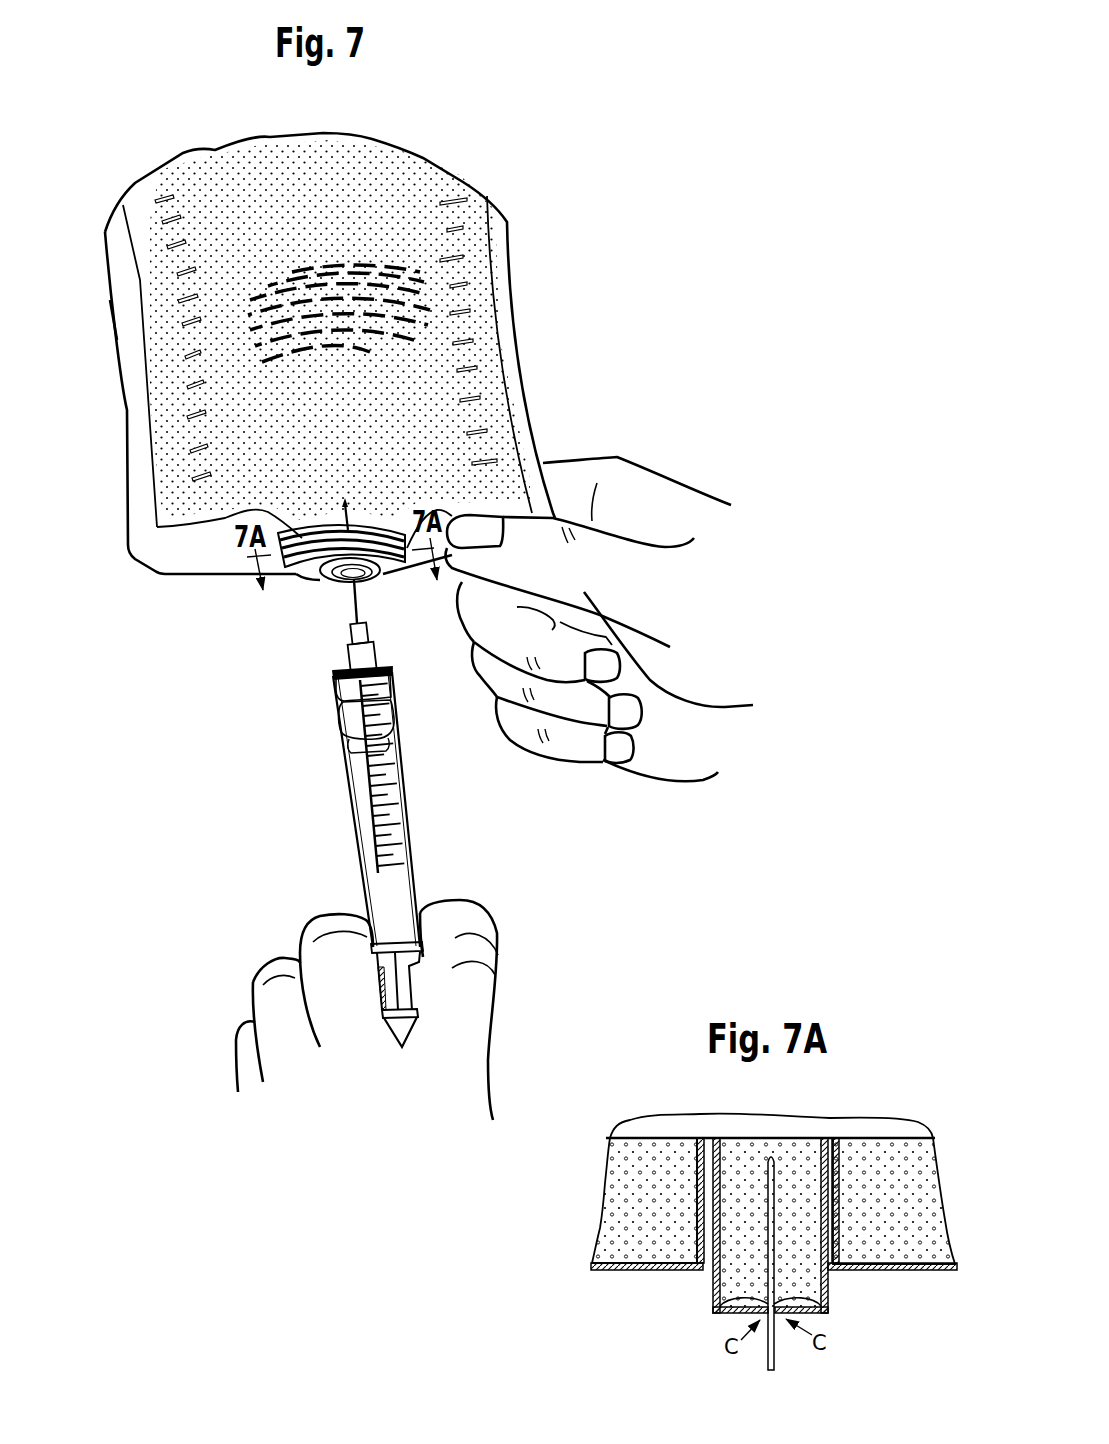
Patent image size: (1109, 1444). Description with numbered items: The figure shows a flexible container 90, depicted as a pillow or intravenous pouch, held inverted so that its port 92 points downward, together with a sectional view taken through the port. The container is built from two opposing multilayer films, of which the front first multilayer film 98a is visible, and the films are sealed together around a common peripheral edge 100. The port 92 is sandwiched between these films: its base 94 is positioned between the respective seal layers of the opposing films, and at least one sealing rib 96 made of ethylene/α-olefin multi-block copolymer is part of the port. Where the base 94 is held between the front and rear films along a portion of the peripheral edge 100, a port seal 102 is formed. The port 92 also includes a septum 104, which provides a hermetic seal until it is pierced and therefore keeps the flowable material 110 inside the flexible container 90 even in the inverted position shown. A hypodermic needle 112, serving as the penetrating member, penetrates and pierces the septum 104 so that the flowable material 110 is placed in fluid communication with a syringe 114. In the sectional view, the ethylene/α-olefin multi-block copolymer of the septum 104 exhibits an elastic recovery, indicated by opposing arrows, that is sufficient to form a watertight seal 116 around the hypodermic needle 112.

In FIG. 7, the flexible container 90 is at (523, 170).
In FIG. 7, the port 92 is at (291, 594).
In FIG. 7A, the port 92 is at (655, 1282).
In FIG. 7, the base 94 is at (376, 573).
In FIG. 7A, the base 94 is at (828, 1284).
In FIG. 7, the sealing rib 96 is at (293, 570).
In FIG. 7A, the sealing rib 96 is at (697, 1170).
In FIG. 7, the first multilayer film 98a is at (118, 332).
In FIG. 7, the peripheral edge 100 is at (518, 312).
In FIG. 7, the port seal 102 is at (160, 515).
In FIG. 7, the septum 104 is at (360, 583).
In FIG. 7A, the septum 104 is at (813, 1313).
In FIG. 7A, the flowable material 110 is at (786, 1138).
In FIG. 7, the hypodermic needle 112 is at (345, 618).
In FIG. 7A, the hypodermic needle 112 is at (775, 1357).
In FIG. 7, the syringe 114 is at (297, 806).
In FIG. 7A, the watertight seal 116 is at (745, 1302).